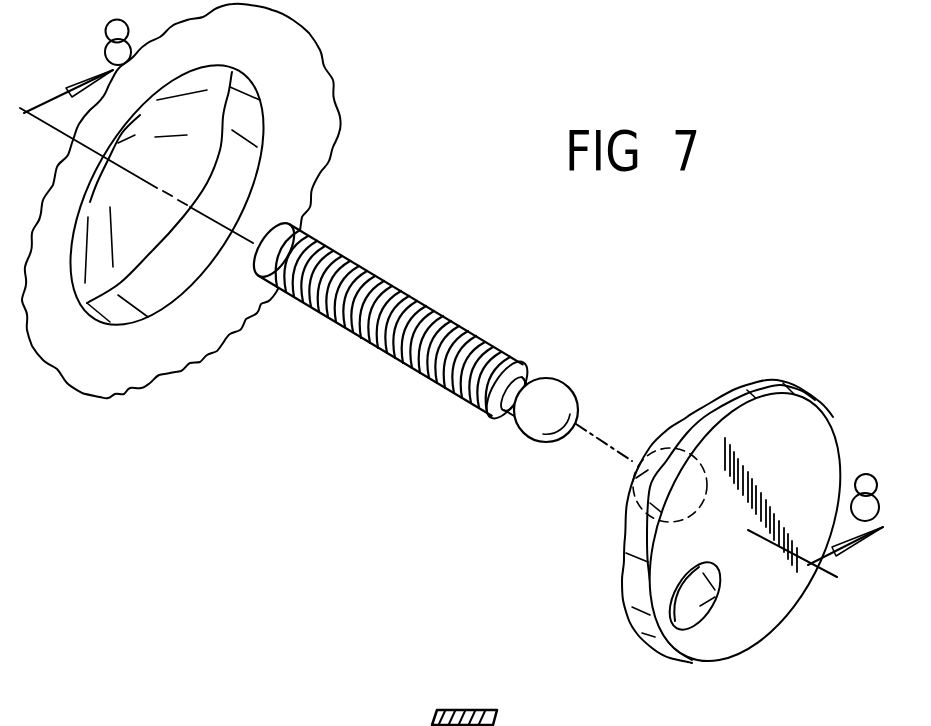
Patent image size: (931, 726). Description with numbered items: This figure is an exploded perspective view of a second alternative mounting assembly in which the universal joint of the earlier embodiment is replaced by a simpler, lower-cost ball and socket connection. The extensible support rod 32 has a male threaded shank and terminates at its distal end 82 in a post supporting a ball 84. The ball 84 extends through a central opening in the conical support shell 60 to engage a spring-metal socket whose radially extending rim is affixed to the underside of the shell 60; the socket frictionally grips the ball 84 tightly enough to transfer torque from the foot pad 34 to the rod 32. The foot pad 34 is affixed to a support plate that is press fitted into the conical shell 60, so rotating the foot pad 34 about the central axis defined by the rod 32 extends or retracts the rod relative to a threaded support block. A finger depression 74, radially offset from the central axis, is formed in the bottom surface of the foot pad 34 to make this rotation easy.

The extensible support rod 32 is at (399, 289).
The distal end 82 is at (527, 378).
The ball 84 is at (566, 396).
The conical support shell 60 is at (677, 423).
The foot pad 34 is at (805, 428).
The finger depression 74 is at (700, 607).